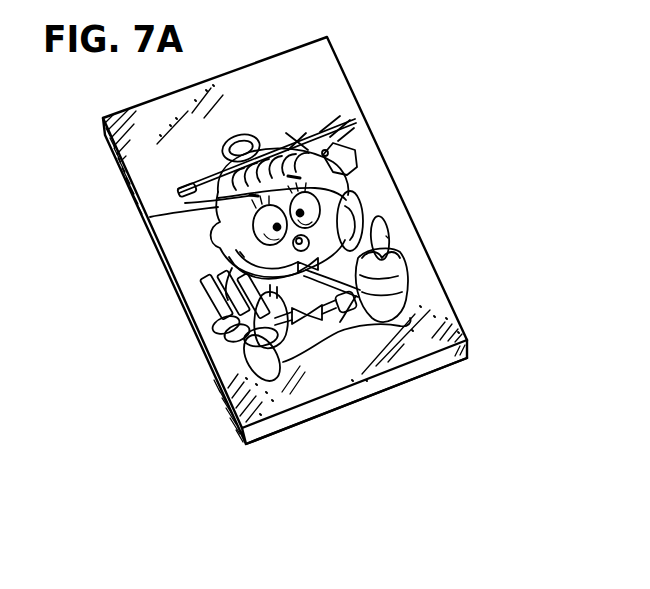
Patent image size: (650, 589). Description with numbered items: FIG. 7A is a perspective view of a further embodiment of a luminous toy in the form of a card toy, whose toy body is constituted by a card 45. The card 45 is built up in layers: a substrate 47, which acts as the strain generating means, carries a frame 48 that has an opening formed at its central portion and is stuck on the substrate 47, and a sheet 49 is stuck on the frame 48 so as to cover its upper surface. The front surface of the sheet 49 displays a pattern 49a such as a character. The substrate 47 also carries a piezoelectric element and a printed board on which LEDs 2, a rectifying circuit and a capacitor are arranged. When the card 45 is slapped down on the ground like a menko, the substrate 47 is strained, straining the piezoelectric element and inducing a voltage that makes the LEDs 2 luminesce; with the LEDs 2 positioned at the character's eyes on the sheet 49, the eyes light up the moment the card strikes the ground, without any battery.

The card 45 is at (410, 131).
The LEDs 2 is at (185, 203).
The pattern 49a is at (388, 237).
The sheet 49 is at (427, 331).
The frame 48 is at (397, 377).
The substrate 47 is at (303, 417).